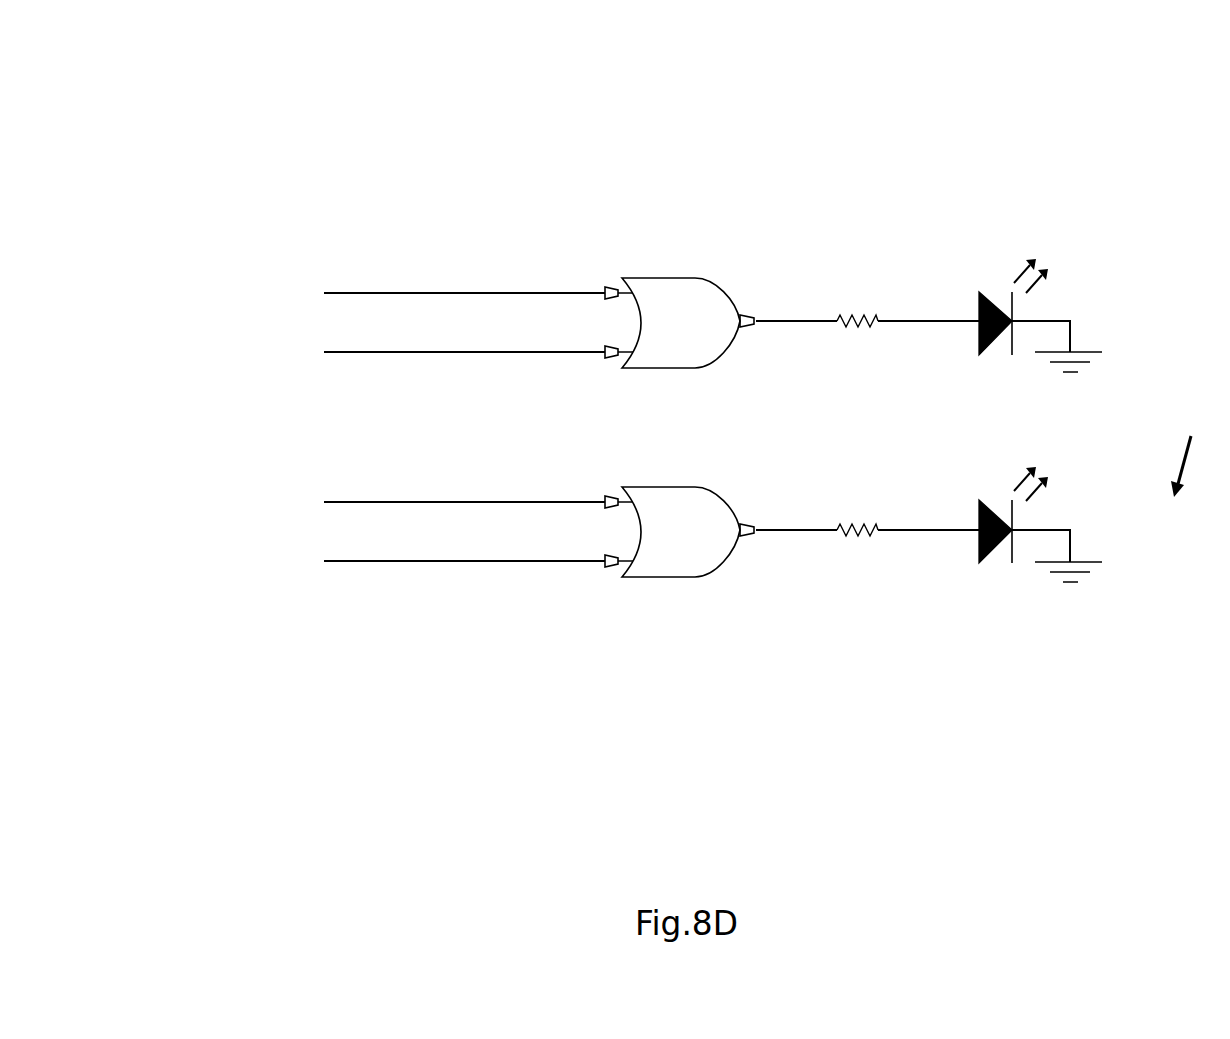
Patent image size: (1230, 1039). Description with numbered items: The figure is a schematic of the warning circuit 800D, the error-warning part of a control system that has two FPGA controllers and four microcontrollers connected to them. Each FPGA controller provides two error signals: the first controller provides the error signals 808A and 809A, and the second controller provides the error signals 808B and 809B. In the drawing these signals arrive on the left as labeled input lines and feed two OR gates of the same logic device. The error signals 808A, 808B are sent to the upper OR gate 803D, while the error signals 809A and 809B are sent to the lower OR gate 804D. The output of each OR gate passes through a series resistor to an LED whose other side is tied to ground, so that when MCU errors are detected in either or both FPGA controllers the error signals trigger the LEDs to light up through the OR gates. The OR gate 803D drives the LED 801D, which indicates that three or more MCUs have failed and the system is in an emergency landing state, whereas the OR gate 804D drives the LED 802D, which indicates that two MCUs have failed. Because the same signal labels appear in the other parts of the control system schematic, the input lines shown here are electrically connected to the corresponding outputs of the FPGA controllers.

The warning circuit 800D is at (360, 68).
The LED 801D is at (987, 215).
The LED 802D is at (987, 575).
The OR gate 803D is at (673, 268).
The OR gate 804D is at (673, 624).
The error signal 808A is at (337, 271).
The error signal 808B is at (337, 327).
The error signal 809A is at (337, 479).
The error signal 809B is at (320, 546).